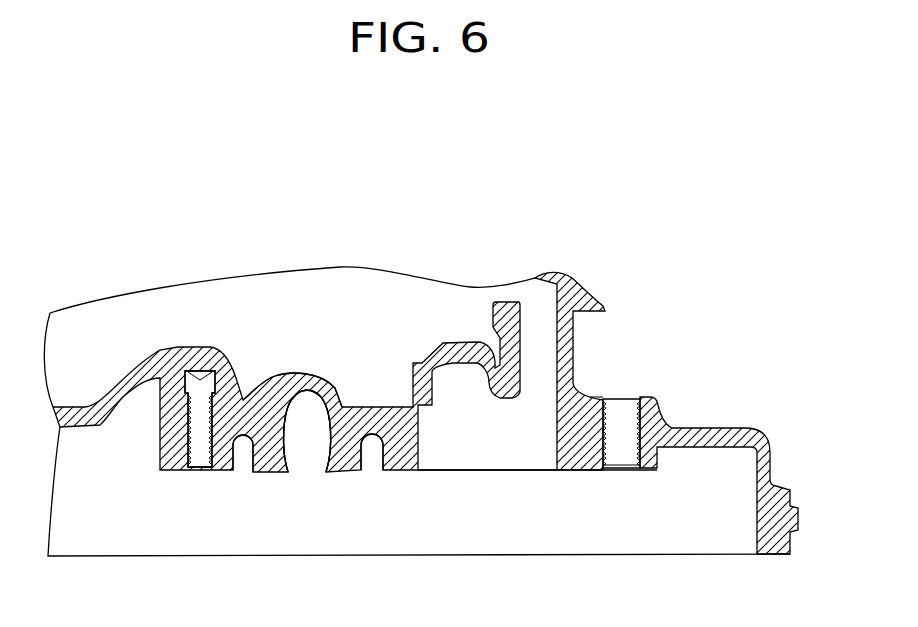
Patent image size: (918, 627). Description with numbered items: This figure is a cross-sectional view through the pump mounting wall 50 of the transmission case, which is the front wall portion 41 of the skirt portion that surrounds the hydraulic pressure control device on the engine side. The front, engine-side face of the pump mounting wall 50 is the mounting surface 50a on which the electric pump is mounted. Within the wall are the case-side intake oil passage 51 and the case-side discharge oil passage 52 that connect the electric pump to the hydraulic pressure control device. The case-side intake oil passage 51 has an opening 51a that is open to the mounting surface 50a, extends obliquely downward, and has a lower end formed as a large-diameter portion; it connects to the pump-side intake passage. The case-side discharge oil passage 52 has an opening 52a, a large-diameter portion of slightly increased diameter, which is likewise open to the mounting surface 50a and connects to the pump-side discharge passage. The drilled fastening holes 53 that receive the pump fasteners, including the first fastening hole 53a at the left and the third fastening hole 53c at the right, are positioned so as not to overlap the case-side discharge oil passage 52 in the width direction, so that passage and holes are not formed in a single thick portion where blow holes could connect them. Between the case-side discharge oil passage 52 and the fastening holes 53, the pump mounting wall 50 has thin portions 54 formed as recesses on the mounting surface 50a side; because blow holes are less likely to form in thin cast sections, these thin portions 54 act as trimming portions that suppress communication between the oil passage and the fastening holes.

The pump mounting wall 50 is at (120, 363).
The front wall portion 41 is at (421, 396).
The mounting surface 50a is at (583, 474).
The case-side intake oil passage 51 is at (533, 403).
The opening of the case-side intake oil passage 51a is at (478, 457).
The case-side discharge oil passage 52 is at (305, 415).
The opening of the case-side discharge oil passage 52a is at (305, 460).
The fastening holes 53 is at (470, 457).
The first fastening hole 53a is at (197, 453).
The third fastening hole 53c is at (618, 427).
The thin portions 54 is at (243, 397).